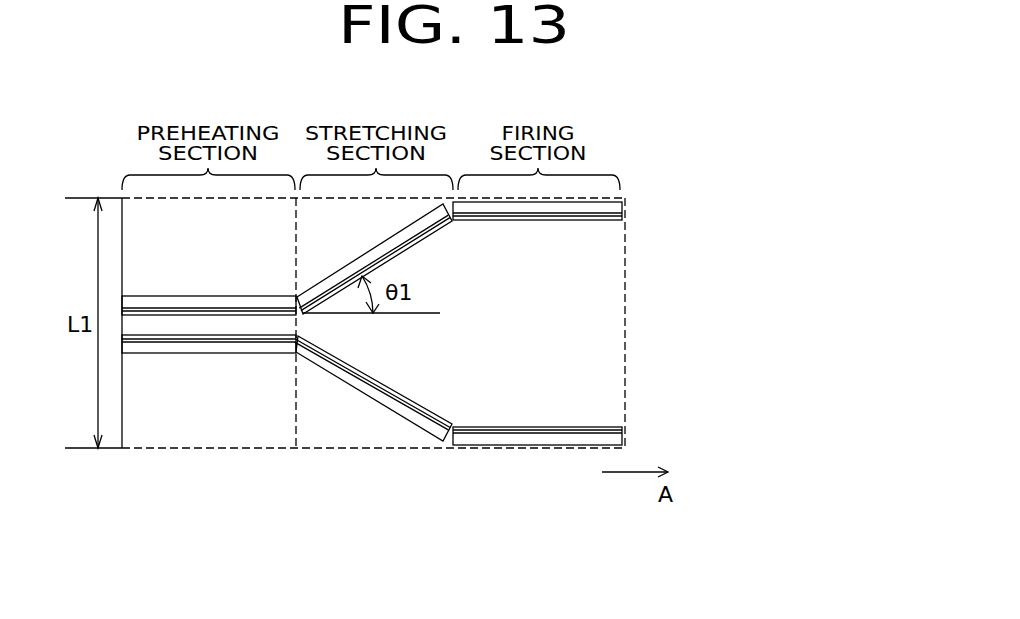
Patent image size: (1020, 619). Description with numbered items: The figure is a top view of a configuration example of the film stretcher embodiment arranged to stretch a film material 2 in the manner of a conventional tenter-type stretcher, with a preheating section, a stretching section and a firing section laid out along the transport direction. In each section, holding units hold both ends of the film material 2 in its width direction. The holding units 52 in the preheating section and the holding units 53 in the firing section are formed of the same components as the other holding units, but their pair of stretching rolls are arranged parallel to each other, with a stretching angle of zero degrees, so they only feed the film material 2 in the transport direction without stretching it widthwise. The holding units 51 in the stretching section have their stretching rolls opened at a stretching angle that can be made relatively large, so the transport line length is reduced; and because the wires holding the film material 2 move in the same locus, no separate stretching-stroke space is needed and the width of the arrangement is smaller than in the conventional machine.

The film material 2 is at (607, 332).
The holding unit 51 is at (423, 241).
The holding unit 52 is at (197, 296).
The holding unit 53 is at (622, 207).